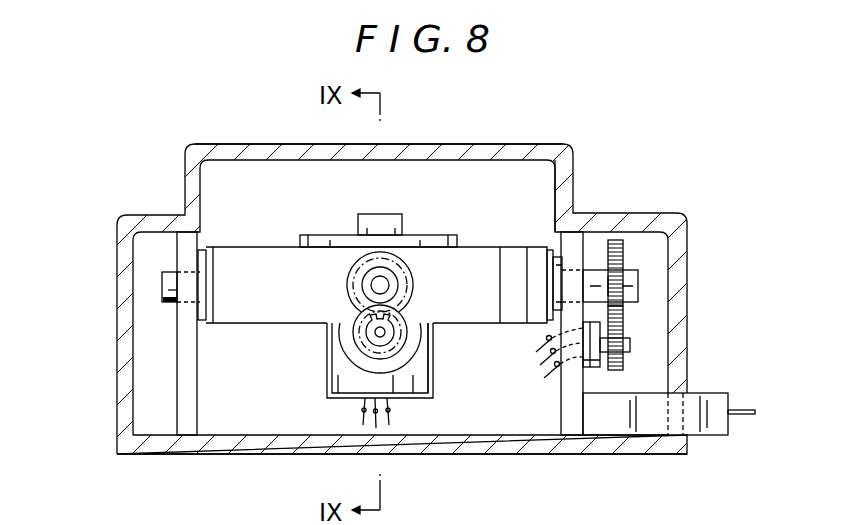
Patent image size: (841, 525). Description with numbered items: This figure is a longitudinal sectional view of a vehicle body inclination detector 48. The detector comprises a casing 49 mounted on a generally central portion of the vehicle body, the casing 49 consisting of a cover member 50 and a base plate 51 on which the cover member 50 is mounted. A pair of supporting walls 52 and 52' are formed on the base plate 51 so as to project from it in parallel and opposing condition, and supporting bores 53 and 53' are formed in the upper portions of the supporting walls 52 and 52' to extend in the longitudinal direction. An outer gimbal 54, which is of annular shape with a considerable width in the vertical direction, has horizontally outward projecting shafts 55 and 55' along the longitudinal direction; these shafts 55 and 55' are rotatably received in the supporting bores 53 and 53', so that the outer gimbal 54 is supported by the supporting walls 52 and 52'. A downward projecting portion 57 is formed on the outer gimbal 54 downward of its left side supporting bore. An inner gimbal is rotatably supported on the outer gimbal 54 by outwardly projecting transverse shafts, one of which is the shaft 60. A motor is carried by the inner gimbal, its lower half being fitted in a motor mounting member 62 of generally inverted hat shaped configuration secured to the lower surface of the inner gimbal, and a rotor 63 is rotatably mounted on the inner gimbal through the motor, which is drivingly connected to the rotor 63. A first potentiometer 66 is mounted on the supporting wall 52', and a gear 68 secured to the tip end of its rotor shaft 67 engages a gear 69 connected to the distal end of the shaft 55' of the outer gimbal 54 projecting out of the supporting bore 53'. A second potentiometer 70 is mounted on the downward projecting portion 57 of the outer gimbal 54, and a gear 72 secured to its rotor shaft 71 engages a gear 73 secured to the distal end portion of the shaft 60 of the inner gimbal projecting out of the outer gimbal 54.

The vehicle body inclination detector 48 is at (658, 117).
The casing 49 is at (573, 150).
The cover member 50 is at (487, 147).
The base plate 51 is at (473, 448).
The supporting wall 52 is at (132, 333).
The supporting wall 52' is at (548, 367).
The supporting bore 53 is at (159, 332).
The supporting bore 53' is at (541, 244).
The outer gimbal 54 is at (240, 252).
The shaft 55 is at (131, 281).
The shaft 55' is at (679, 266).
The downward projecting portion 57 is at (397, 367).
The shaft 60 is at (390, 290).
The motor mounting member 62 is at (430, 345).
The rotor 63 is at (435, 247).
The first potentiometer 66 is at (592, 368).
The rotor shaft 67 is at (632, 345).
The gear 68 is at (623, 327).
The gear 69 is at (623, 257).
The second potentiometer 70 is at (365, 338).
The rotor shaft 71 is at (375, 345).
The gear 72 is at (398, 348).
The gear 73 is at (352, 282).